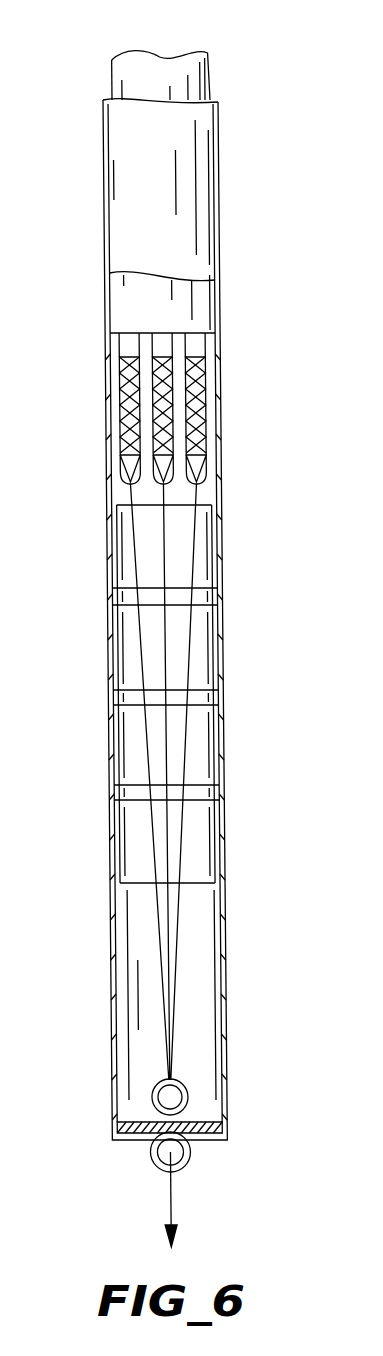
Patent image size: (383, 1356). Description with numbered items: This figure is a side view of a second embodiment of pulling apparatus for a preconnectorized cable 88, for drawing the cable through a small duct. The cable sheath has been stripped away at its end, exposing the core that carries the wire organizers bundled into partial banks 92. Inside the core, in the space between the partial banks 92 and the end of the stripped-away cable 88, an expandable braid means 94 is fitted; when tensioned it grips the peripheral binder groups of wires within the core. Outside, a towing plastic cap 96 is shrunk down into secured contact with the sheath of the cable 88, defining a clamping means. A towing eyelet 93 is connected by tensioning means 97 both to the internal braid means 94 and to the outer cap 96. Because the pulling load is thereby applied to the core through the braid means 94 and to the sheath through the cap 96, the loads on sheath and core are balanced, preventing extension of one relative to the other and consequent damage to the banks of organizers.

The cable 88 is at (154, 78).
The towing plastic cap 96 is at (218, 478).
The expandable braid means 94 is at (187, 432).
The partial banks of wire organizers 92 is at (119, 622).
The tensioning means 97 is at (134, 752).
The towing eyelet 93 is at (176, 1166).